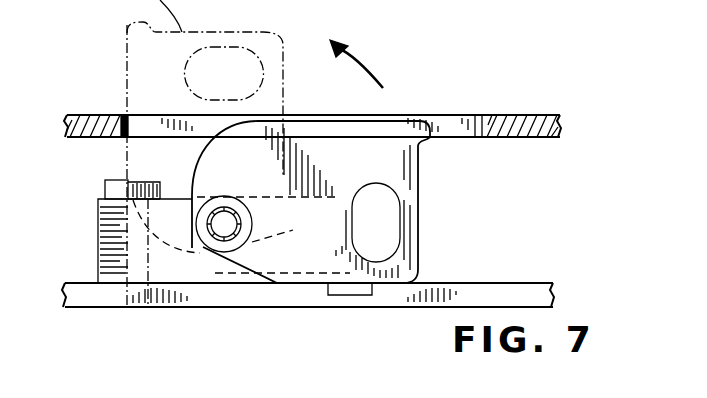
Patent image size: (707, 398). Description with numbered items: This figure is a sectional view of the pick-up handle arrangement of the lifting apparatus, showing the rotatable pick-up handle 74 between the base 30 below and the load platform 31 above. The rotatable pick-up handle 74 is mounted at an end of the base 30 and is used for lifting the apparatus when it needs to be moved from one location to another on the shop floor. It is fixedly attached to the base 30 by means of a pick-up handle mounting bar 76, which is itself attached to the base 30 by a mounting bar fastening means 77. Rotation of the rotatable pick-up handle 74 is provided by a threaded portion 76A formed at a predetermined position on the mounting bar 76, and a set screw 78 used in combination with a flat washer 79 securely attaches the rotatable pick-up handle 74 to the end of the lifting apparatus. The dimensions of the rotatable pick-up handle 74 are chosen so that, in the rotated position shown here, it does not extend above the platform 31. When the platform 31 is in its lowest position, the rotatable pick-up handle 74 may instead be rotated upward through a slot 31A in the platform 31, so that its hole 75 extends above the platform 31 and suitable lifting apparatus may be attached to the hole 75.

The base 30 is at (83, 300).
The load platform 31 is at (100, 115).
The slot 31A is at (476, 118).
The rotatable pick-up handle 74 is at (420, 182).
The hole 75 is at (258, 44).
The pick-up handle mounting bar 76 is at (110, 233).
The threaded portion 76A is at (229, 121).
The mounting bar fastening means 77 is at (140, 187).
The set screw 78 is at (233, 214).
The flat washer 79 is at (213, 245).